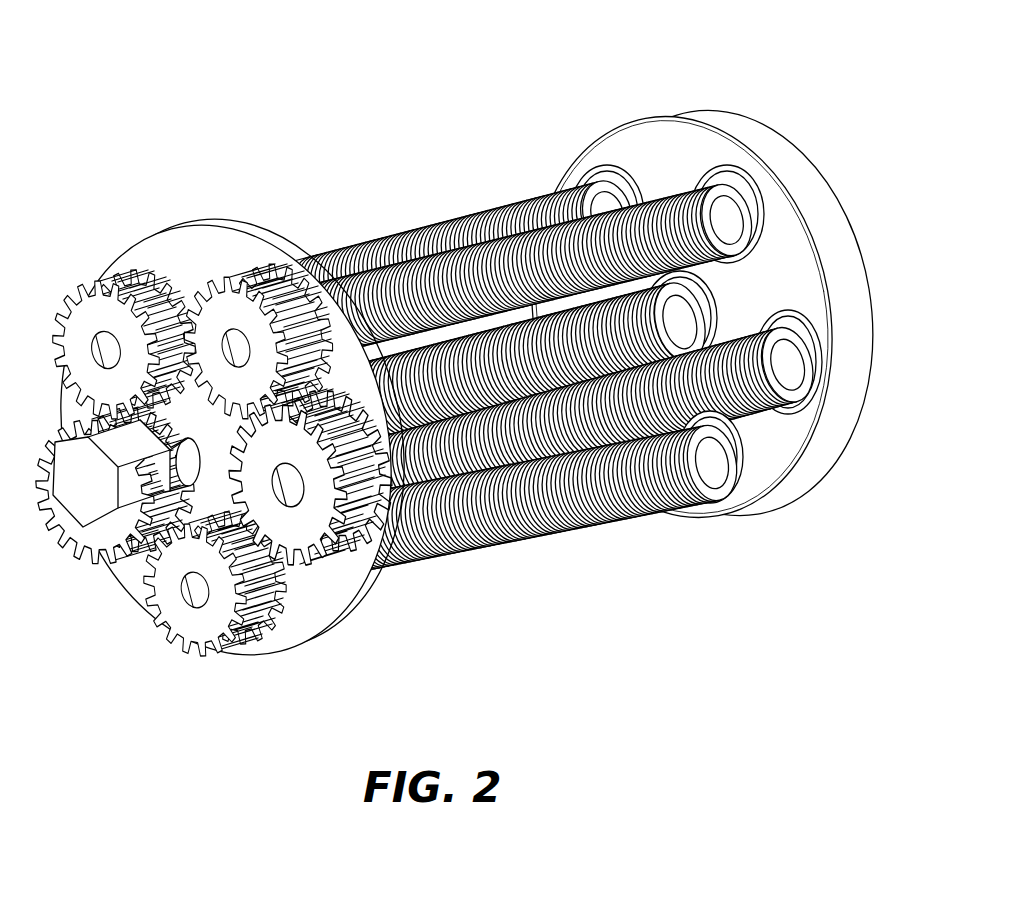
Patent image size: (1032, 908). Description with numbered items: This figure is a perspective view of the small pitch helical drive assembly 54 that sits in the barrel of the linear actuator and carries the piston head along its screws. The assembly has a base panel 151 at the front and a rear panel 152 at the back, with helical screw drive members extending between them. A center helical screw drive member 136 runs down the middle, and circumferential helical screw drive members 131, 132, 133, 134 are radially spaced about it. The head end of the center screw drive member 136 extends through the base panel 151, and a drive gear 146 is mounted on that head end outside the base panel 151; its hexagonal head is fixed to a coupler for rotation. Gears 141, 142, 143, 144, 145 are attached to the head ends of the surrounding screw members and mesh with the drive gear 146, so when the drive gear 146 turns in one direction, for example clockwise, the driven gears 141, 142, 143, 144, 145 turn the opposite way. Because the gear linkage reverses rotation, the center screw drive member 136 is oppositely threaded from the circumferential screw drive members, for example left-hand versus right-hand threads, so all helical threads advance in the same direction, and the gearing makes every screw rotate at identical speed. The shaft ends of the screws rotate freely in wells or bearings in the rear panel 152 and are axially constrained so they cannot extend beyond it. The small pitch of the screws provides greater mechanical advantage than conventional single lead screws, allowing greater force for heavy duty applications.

The small pitch helical drive assembly 54 is at (468, 368).
The helical screw drive member 131 is at (460, 548).
The helical screw drive member 132 is at (741, 506).
The helical screw drive member 133 is at (745, 210).
The helical screw drive member 134 is at (530, 207).
The center helical screw drive member 136 is at (672, 323).
The gear 141 is at (172, 646).
The gear 142 is at (308, 564).
The gear 143 is at (300, 277).
The gear 144 is at (80, 285).
The gear 145 is at (76, 560).
The drive gear 146 is at (113, 512).
The base panel 151 is at (196, 230).
The rear panel 152 is at (672, 122).